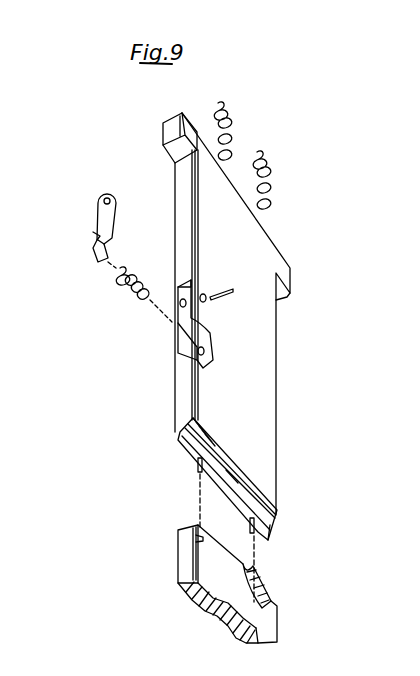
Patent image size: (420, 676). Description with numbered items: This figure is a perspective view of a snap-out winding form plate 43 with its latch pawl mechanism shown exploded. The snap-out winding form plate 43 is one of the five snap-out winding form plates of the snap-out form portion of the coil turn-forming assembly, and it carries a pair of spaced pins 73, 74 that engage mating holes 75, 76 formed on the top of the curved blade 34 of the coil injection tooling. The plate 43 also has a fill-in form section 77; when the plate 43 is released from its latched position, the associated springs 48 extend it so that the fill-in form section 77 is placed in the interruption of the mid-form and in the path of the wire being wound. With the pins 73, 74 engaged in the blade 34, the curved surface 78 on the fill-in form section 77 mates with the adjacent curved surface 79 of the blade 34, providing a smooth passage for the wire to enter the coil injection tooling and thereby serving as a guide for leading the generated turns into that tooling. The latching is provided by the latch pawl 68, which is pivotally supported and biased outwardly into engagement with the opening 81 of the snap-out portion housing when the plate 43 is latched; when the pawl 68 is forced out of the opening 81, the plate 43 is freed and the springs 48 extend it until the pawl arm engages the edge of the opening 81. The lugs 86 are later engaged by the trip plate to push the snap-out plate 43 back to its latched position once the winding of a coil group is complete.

The curved blade 34 is at (263, 615).
The snap-out winding form plate 43 is at (287, 380).
The springs 48 is at (260, 156).
The latch pawl 68 is at (96, 236).
The pin 73 is at (196, 465).
The pin 74 is at (250, 523).
The hole 75 is at (178, 545).
The hole 76 is at (245, 583).
The fill-in form section 77 is at (183, 438).
The curved surface 78 is at (226, 477).
The curved surface 79 is at (218, 558).
The opening 81 is at (180, 290).
The lugs 86 is at (181, 116).